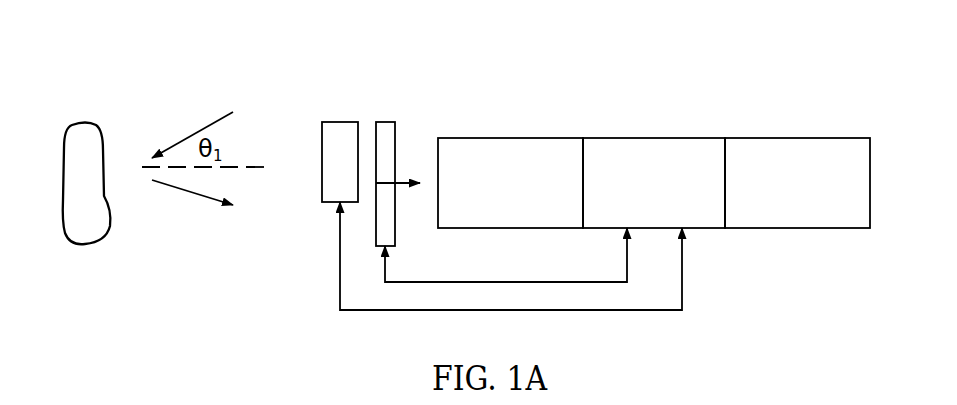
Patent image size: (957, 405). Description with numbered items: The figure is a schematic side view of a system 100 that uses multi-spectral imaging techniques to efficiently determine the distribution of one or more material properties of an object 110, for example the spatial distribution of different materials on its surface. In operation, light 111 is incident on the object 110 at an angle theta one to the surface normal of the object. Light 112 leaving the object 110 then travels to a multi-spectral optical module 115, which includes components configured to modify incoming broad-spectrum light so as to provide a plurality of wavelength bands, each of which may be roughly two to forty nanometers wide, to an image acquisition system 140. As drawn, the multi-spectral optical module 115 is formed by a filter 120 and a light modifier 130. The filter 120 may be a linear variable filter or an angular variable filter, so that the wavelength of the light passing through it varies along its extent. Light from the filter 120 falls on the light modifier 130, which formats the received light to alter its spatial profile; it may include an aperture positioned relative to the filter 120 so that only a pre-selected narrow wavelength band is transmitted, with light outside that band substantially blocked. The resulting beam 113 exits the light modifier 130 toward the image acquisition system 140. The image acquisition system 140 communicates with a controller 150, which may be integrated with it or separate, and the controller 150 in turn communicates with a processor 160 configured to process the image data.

The system 100 is at (583, 58).
The object 110 is at (90, 122).
The light 111 is at (203, 122).
The light 112 is at (173, 190).
The output beam 113 is at (400, 187).
The multi-spectral optical module 115 is at (313, 58).
The filter 120 is at (333, 120).
The light modifier 130 is at (388, 120).
The image acquisition system 140 is at (552, 137).
The controller 150 is at (703, 137).
The processor 160 is at (847, 137).